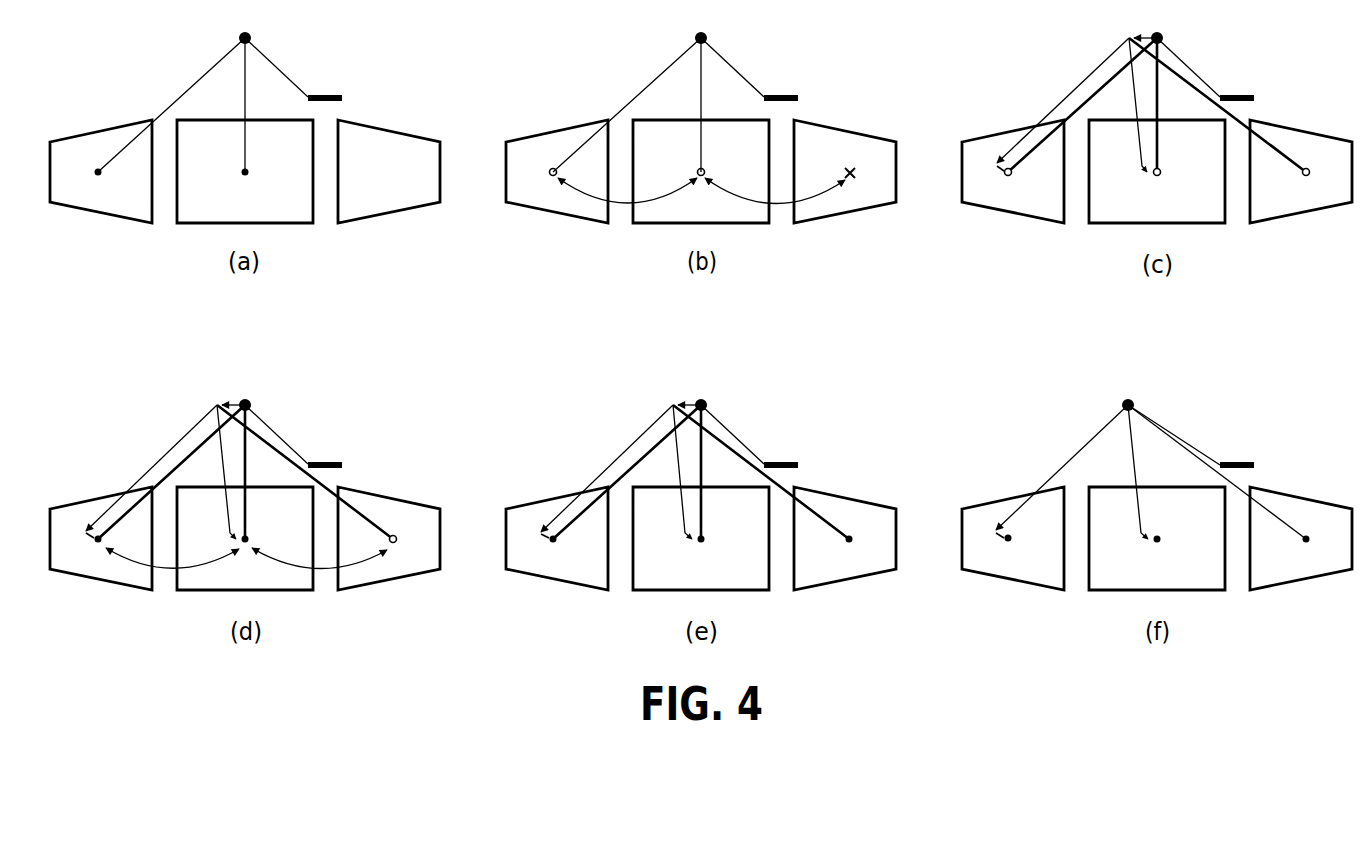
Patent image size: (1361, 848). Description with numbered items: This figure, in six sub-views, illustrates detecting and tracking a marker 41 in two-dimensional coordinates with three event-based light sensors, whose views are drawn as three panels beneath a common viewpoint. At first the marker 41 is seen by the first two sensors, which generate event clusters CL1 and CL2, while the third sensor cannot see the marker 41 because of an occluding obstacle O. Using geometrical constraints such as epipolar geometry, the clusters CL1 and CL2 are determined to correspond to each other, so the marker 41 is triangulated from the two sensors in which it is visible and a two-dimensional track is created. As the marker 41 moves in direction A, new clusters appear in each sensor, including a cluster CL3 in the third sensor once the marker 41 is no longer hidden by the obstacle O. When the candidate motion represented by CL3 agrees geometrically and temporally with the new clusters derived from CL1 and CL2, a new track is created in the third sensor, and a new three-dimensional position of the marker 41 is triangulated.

The marker 41 is at (720, 217).
The direction of marker movement A is at (678, 206).
The occluding obstacle O is at (755, 253).
The event cluster of sensor C1 CL1 is at (556, 356).
The event cluster of sensor C2 CL2 is at (695, 360).
The event cluster of sensor C3 CL3 is at (868, 371).